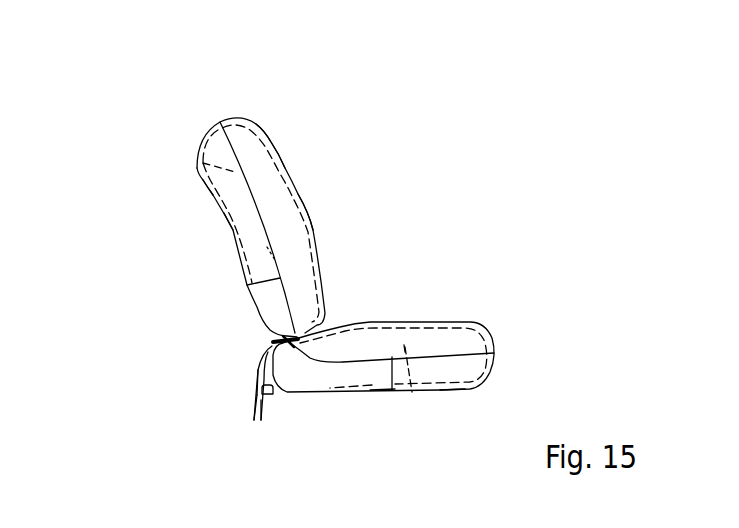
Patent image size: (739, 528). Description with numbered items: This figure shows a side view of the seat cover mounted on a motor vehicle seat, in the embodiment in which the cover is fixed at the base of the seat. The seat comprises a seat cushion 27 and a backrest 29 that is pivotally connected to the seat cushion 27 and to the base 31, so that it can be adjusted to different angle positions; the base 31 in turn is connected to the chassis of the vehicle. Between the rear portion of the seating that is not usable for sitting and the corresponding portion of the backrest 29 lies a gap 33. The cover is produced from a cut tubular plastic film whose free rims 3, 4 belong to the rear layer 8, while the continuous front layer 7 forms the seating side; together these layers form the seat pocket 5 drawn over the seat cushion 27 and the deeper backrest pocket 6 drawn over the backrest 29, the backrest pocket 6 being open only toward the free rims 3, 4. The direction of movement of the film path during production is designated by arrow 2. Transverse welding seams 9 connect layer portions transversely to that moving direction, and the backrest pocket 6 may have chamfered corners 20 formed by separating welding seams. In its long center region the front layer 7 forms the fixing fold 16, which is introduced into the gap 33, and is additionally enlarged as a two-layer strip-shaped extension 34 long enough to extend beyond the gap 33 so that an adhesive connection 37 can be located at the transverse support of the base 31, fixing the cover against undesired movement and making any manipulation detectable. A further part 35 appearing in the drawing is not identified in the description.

The arrow 2 is at (481, 327).
The free rim 3 is at (494, 353).
The free rim 4 is at (220, 122).
The seat pocket 5 is at (380, 393).
The backrest pocket 6 is at (247, 285).
The front layer 7 is at (280, 153).
The rear layer 8 is at (208, 188).
The transverse welding seam 9 is at (262, 215).
The fixing fold 16 is at (268, 348).
The chamfered corner 20 is at (314, 204).
The seat cushion 27 is at (410, 392).
The backrest 29 is at (200, 155).
The base 31 is at (267, 395).
The gap 33 is at (248, 340).
The strip-shaped extension 34 is at (257, 365).
The guide slot 35 is at (259, 405).
The adhesive connection 37 is at (243, 394).